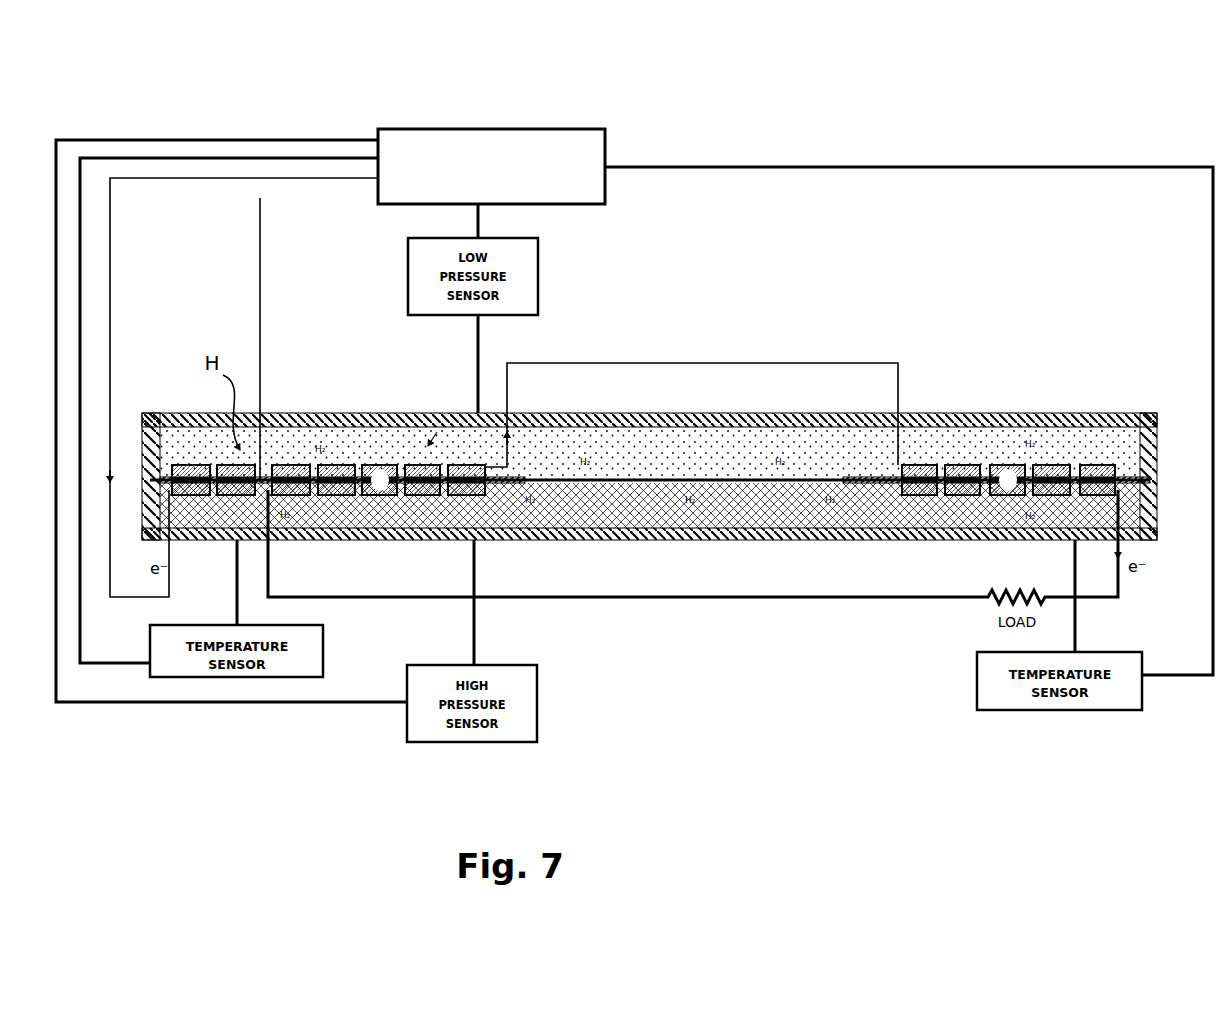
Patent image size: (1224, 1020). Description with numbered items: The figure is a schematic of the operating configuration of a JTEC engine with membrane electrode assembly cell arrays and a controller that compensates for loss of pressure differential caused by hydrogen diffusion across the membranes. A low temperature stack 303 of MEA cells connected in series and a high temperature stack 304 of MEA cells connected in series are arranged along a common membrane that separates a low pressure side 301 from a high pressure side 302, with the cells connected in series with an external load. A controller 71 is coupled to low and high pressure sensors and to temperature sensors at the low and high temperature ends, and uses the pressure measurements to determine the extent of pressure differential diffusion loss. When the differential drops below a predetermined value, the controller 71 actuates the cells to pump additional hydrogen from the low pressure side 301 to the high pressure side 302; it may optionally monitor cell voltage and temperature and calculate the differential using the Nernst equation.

The controller 71 is at (568, 128).
The low pressure side 301 is at (365, 430).
The high pressure side 302 is at (920, 527).
The low temperature MEA stack 303 is at (296, 460).
The high temperature MEA stack 304 is at (1104, 462).